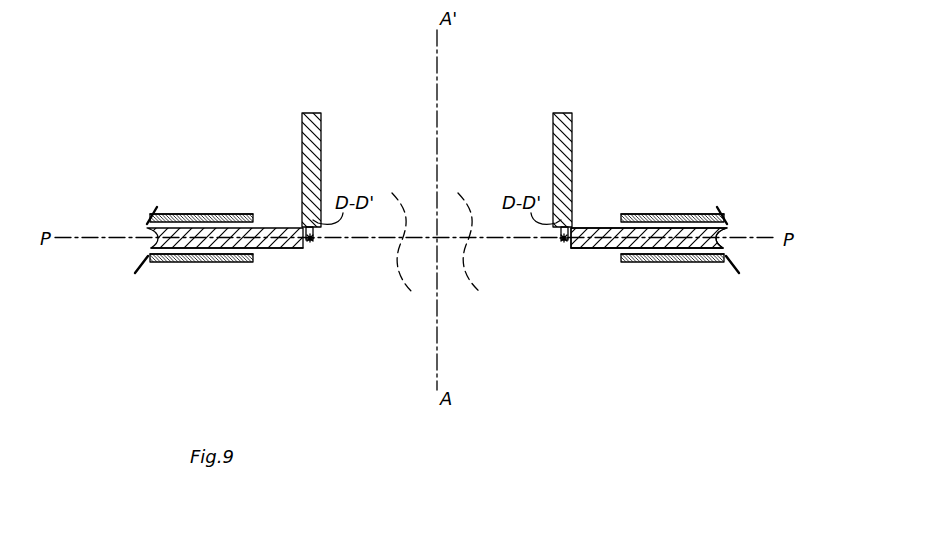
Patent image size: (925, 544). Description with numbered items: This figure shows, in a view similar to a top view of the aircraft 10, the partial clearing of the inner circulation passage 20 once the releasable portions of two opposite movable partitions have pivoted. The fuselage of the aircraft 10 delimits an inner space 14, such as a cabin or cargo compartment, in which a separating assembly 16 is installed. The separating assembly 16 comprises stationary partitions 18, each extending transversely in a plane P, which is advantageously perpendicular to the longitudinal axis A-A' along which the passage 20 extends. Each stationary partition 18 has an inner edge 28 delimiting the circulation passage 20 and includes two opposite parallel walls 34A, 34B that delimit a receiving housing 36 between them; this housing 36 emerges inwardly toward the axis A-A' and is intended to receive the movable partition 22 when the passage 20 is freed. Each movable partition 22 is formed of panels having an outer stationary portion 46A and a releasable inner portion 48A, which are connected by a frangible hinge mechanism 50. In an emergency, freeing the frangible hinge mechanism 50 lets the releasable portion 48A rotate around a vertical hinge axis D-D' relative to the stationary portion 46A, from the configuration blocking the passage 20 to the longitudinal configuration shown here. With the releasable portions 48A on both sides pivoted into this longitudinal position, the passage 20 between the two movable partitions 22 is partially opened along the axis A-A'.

The aircraft 10 is at (652, 87).
The inner space 14 is at (465, 210).
The separating assembly 16 is at (590, 297).
The stationary partition 18 is at (202, 185).
The inner circulation passage 20 is at (453, 252).
The movable partition 22 is at (264, 216).
The inner edge 28 is at (253, 262).
The parallel wall 34A is at (161, 213).
The parallel wall 34B is at (197, 262).
The receiving housing 36 is at (140, 223).
The upper stationary portion 46A is at (280, 240).
The upper releasable portion 48A is at (302, 133).
The frangible hinge mechanism 50 is at (323, 249).